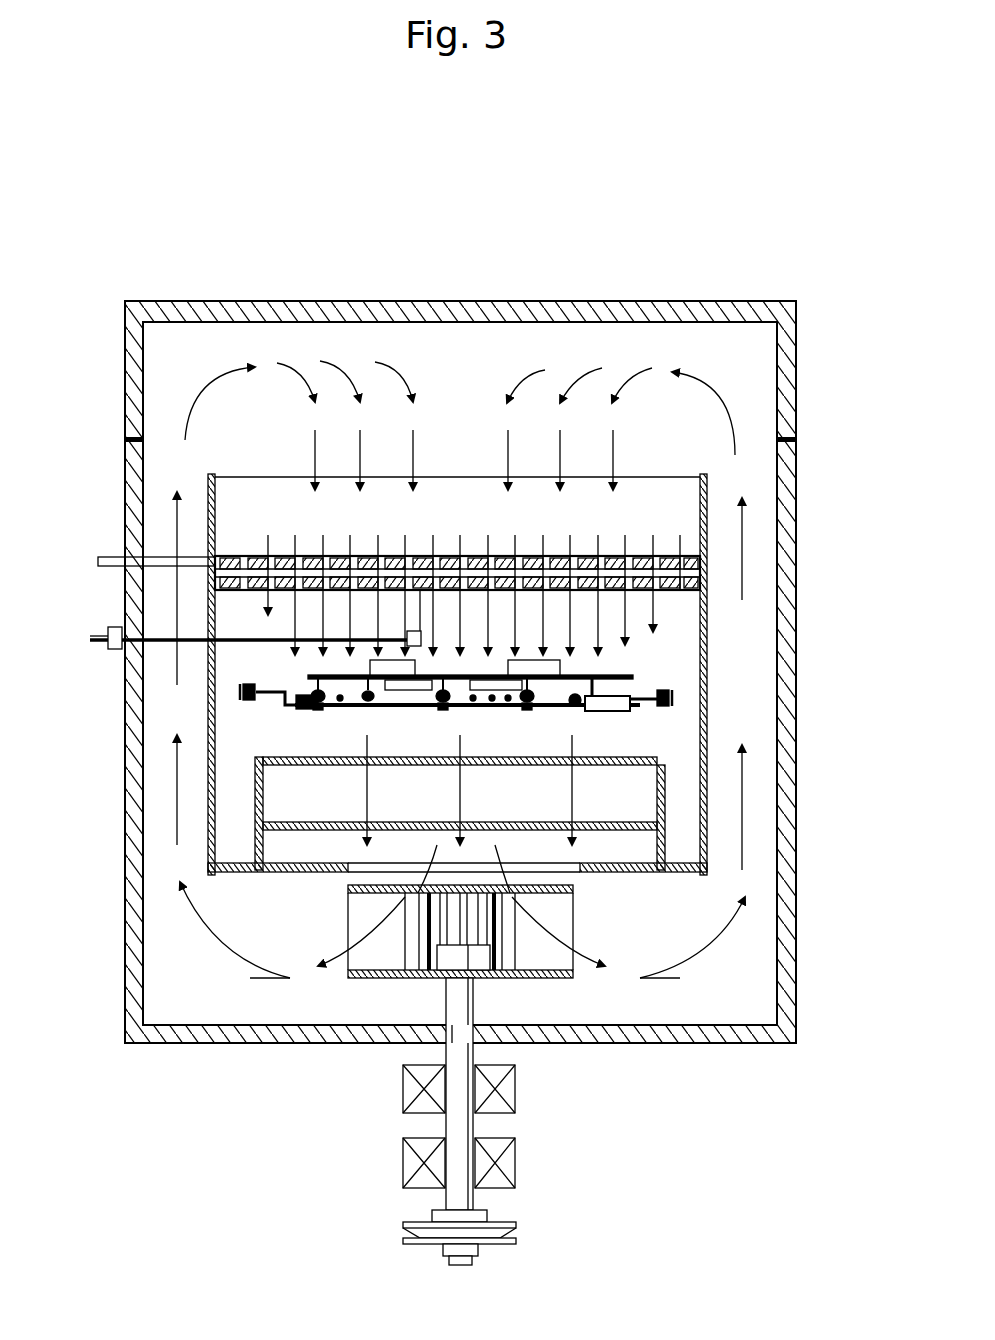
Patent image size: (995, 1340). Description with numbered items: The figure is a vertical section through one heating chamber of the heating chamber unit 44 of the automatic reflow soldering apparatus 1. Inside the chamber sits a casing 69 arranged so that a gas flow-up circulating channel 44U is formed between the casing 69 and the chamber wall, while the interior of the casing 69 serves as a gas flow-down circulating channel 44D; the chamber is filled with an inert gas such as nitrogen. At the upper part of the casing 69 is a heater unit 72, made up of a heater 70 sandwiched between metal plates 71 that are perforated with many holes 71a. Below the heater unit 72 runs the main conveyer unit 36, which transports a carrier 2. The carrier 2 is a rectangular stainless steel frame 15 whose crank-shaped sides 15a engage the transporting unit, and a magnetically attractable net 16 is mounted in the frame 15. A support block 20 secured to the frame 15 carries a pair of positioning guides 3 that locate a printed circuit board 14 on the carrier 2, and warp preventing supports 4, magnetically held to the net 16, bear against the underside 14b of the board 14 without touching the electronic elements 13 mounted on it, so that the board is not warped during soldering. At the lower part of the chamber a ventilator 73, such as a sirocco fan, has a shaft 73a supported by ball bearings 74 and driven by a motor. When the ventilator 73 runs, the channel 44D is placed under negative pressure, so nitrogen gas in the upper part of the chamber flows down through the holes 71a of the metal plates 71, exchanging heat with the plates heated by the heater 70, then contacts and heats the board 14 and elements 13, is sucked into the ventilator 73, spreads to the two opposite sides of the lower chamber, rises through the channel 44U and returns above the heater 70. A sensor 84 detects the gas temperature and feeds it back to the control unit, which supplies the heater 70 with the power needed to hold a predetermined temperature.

The automatic reflow soldering apparatus 1 is at (735, 262).
The heating chamber unit 44 is at (517, 300).
The gas flow-up circulating channel 44U is at (160, 478).
The gas flow-down circulating channel 44D is at (240, 740).
The casing 69 is at (707, 481).
The metal plates 71 is at (228, 553).
The holes 71a is at (295, 556).
The heater unit 72 is at (640, 553).
The heater 70 is at (448, 556).
The sensor 84 is at (421, 556).
The main conveyer unit 36 is at (240, 697).
The positioning guides 3 is at (630, 670).
The support block 20 is at (600, 680).
The carrier 2 is at (640, 708).
The warp preventing supports 4 is at (440, 712).
The electronic elements 13 is at (500, 680).
The printed circuit board 14 is at (333, 714).
The underside of the printed circuit board 14b is at (370, 702).
The net 16 is at (556, 700).
The frame 15 is at (610, 712).
The sides of the frame 15a is at (240, 690).
The ventilator 73 is at (360, 985).
The shaft 73a is at (446, 1128).
The ball bearings 74 is at (515, 1100).